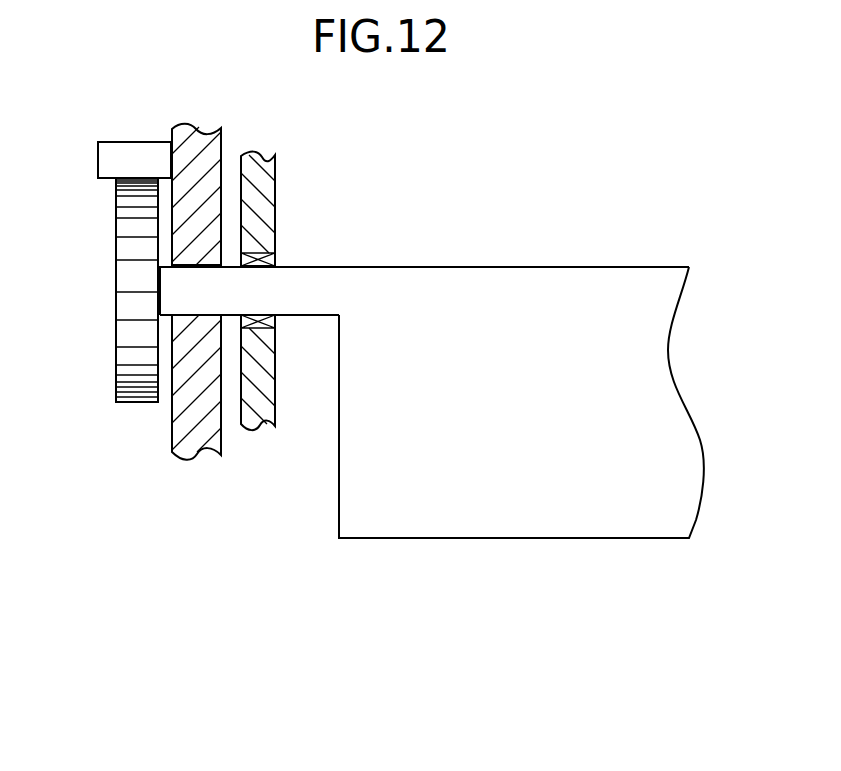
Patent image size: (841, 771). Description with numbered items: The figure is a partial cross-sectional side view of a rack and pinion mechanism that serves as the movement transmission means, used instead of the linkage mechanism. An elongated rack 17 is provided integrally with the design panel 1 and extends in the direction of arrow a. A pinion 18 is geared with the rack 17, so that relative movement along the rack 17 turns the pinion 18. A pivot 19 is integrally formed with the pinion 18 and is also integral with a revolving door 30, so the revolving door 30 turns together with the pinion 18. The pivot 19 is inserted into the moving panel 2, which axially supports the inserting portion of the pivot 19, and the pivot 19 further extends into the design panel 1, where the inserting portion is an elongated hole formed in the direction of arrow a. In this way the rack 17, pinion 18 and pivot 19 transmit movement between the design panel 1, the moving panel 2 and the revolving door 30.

The design panel 1 is at (195, 140).
The moving panel 2 is at (259, 165).
The rack 17 is at (130, 152).
The pinion 18 is at (118, 358).
The pivot 19 is at (318, 283).
The revolving door 30 is at (586, 283).